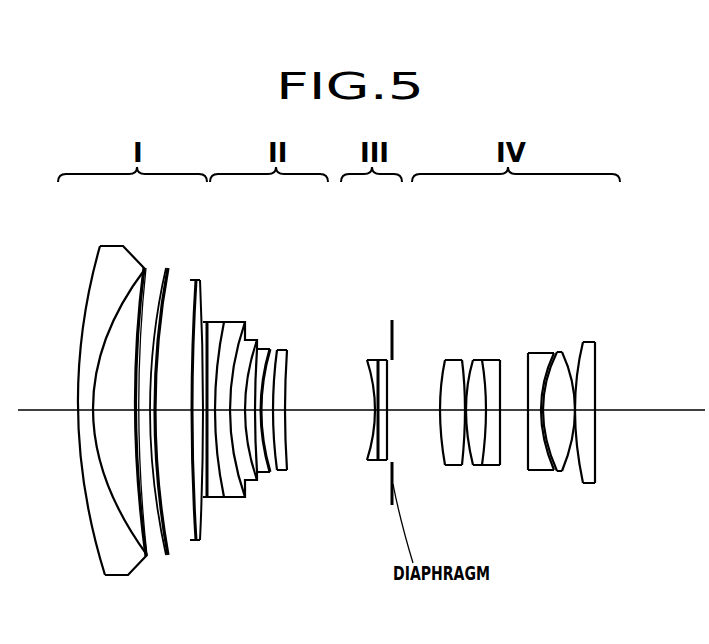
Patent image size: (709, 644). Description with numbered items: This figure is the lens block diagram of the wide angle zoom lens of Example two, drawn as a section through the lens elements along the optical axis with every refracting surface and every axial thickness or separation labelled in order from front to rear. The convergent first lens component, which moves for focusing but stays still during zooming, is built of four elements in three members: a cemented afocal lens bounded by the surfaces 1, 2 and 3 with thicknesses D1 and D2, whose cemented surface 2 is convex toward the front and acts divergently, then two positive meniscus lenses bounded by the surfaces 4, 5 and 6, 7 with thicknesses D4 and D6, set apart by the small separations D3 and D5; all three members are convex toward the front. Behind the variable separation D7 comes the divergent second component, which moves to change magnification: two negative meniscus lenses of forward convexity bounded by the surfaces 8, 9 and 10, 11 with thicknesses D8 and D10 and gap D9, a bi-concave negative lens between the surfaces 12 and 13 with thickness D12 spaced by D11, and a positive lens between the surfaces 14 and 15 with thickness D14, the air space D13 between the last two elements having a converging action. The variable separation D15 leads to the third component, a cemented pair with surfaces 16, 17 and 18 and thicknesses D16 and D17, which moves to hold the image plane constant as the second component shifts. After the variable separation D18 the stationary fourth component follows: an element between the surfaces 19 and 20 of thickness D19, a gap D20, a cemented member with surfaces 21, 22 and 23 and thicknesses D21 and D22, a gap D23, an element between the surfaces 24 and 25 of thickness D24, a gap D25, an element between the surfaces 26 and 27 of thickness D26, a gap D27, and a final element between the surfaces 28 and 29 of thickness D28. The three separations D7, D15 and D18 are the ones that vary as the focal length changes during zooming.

The lens surface R1 1 is at (90, 295).
The lens surface R2 2 is at (100, 246).
The lens surface R3 3 is at (123, 297).
The lens surface R4 4 is at (146, 266).
The lens surface R5 5 is at (164, 266).
The lens surface R6 6 is at (168, 345).
The lens surface R7 7 is at (202, 278).
The lens surface R8 8 is at (206, 321).
The lens surface R9 9 is at (224, 321).
The lens surface R10 10 is at (245, 321).
The lens surface R11 11 is at (257, 339).
The lens surface R12 12 is at (259, 348).
The lens surface R13 13 is at (270, 348).
The lens surface R14 14 is at (278, 349).
The lens surface R15 15 is at (288, 349).
The lens surface R16 16 is at (368, 359).
The lens surface R17 17 is at (378, 359).
The lens surface R18 18 is at (387, 359).
The lens surface R19 19 is at (446, 359).
The lens surface R20 20 is at (462, 359).
The lens surface R21 21 is at (473, 359).
The lens surface R22 22 is at (482, 359).
The lens surface R23 23 is at (500, 359).
The lens surface R24 24 is at (528, 352).
The lens surface R25 25 is at (553, 352).
The lens surface R26 26 is at (558, 351).
The lens surface R27 27 is at (563, 351).
The lens surface R28 28 is at (583, 341).
The lens surface R29 29 is at (595, 341).
The axial thickness D1 is at (86, 411).
The axial thickness D2 is at (118, 412).
The axial separation D3 is at (153, 557).
The axial thickness D4 is at (165, 556).
The axial separation D5 is at (175, 553).
The axial thickness D6 is at (175, 412).
The variable axial separation D7 is at (206, 547).
The axial thickness D8 is at (217, 498).
The axial separation D9 is at (232, 484).
The axial thickness D10 is at (249, 482).
The axial separation D11 is at (262, 476).
The axial thickness D12 is at (272, 474).
The axial separation D13 is at (282, 472).
The axial thickness D14 is at (288, 462).
The variable axial separation D15 is at (334, 410).
The axial thickness D16 is at (372, 416).
The axial thickness D17 is at (381, 418).
The variable axial separation D18 is at (422, 412).
The axial thickness D19 is at (452, 467).
The axial separation D20 is at (466, 467).
The axial thickness D21 is at (480, 467).
The axial thickness D22 is at (493, 467).
The axial separation D23 is at (513, 412).
The axial thickness D24 is at (537, 471).
The axial separation D25 is at (552, 472).
The axial thickness D26 is at (567, 472).
The axial separation D27 is at (580, 474).
The axial thickness D28 is at (592, 484).